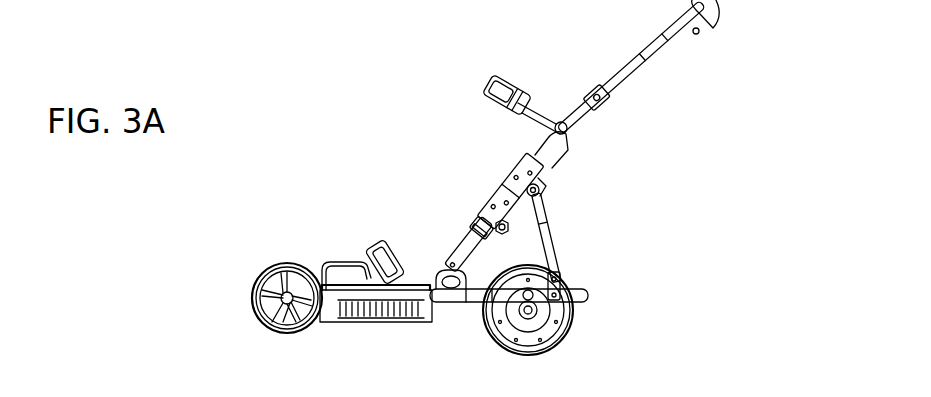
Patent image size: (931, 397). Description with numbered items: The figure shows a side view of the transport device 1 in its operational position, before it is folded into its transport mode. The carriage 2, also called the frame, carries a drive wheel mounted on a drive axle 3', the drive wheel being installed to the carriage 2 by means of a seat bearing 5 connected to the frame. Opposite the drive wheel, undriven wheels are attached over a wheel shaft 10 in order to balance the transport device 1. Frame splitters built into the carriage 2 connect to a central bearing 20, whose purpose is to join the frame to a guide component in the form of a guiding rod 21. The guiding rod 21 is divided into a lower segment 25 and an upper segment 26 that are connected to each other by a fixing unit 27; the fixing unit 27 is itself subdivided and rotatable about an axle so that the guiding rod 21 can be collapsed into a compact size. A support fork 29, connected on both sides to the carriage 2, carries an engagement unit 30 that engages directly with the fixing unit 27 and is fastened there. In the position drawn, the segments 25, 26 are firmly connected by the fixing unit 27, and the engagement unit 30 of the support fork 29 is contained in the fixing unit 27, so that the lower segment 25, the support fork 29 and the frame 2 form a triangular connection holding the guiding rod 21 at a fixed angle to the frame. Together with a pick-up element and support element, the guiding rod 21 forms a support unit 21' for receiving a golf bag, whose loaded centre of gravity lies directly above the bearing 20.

The transport device 1 is at (366, 71).
The carriage 2 is at (588, 296).
The drive axle 3' is at (547, 321).
The seat bearing 5 is at (532, 297).
The wheel shaft 10 is at (288, 295).
The central bearing 20 is at (446, 278).
The guiding rod 21 is at (566, 126).
The support unit 21' is at (688, 101).
The lower segment 25 is at (490, 212).
The upper segment 26 is at (579, 100).
The fixing unit 27 is at (519, 180).
The support fork 29 is at (543, 238).
The engagement unit 30 is at (539, 200).